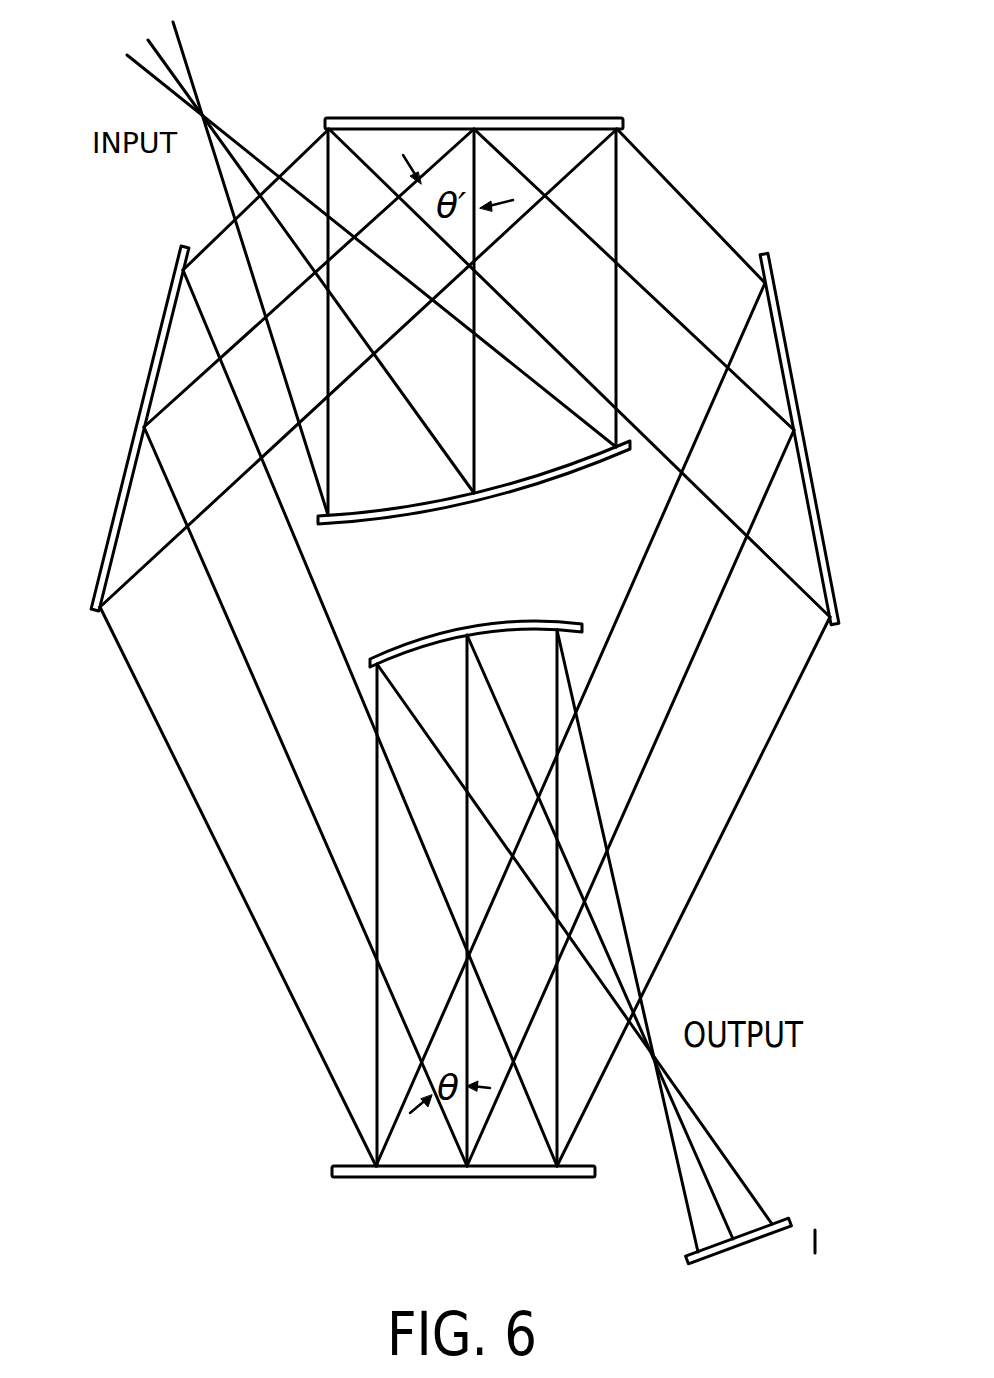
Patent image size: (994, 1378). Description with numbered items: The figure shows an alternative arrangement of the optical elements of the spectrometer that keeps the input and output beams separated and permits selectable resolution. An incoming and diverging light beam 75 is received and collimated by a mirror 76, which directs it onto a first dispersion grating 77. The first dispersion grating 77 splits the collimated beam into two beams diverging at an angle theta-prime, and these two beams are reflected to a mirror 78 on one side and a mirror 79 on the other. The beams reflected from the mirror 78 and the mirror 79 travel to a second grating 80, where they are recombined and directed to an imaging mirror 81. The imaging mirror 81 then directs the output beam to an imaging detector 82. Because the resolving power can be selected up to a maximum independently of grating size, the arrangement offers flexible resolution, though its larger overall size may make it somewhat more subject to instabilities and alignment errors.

The incoming and diverging light beam 75 is at (230, 137).
The mirror 76 is at (525, 500).
The first dispersion grating 77 is at (558, 118).
The mirror 78 is at (125, 457).
The mirror 79 is at (788, 355).
The second grating 80 is at (405, 1178).
The imaging mirror 81 is at (440, 627).
The imaging detector 82 is at (757, 1237).